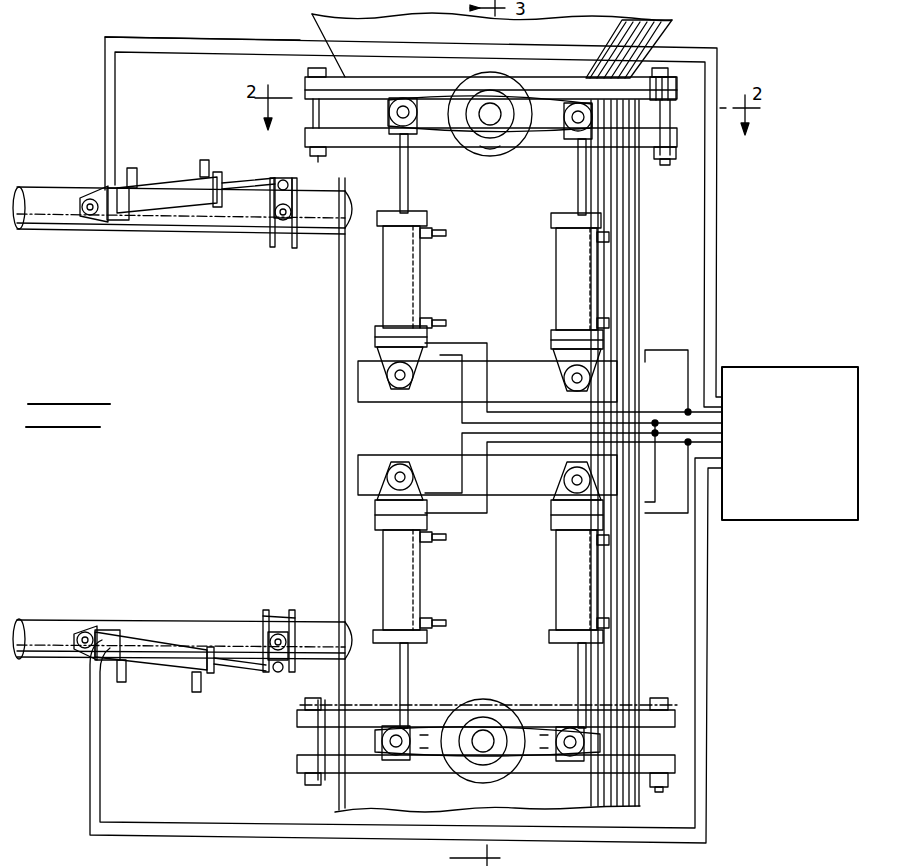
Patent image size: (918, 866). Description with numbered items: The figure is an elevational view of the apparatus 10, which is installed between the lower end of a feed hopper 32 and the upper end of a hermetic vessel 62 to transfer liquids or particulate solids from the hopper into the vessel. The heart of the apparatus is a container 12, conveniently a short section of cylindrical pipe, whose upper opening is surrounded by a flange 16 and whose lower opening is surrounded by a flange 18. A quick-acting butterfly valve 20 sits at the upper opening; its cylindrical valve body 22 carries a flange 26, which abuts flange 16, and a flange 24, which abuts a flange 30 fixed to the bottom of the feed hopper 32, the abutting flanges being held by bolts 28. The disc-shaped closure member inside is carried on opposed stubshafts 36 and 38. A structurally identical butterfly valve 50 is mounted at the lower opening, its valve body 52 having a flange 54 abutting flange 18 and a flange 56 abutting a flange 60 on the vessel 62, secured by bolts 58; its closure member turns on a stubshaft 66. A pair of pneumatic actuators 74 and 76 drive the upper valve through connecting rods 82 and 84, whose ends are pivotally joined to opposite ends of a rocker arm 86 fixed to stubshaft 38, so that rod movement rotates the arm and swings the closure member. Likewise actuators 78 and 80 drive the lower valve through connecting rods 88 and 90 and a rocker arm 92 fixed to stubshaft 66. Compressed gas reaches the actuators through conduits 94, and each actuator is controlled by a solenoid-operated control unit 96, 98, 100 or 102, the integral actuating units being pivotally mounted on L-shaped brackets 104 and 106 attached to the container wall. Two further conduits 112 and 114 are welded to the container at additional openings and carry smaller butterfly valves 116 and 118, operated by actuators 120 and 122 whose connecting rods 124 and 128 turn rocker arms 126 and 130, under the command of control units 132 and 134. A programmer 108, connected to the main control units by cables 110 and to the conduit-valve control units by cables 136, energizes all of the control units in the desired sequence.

The apparatus 10 is at (304, 468).
The container 12 is at (338, 292).
The flange 16 is at (302, 134).
The flange 18 is at (300, 716).
The butterfly valve 20 is at (420, 70).
The valve body 22 is at (663, 120).
The flange 24 is at (306, 88).
The flange 26 is at (336, 126).
The bolts 28 is at (306, 134).
The flange 30 is at (677, 90).
The feed hopper 32 is at (314, 32).
The stubshaft 36 is at (314, 865).
The stubshaft 38 is at (478, 108).
The butterfly valve 50 is at (522, 796).
The valve body 52 is at (610, 738).
The flange 54 is at (676, 724).
The flange 56 is at (676, 774).
The bolts 58 is at (304, 738).
The flange 60 is at (304, 766).
The hermetic vessel 62 is at (334, 786).
The stubshaft 66 is at (484, 740).
The pneumatic actuator 74 is at (386, 272).
The pneumatic actuator 76 is at (556, 268).
The pneumatic actuator 78 is at (384, 575).
The pneumatic actuator 80 is at (554, 588).
The connecting rod 82 is at (410, 178).
The connecting rod 84 is at (578, 180).
The rocker arm 86 is at (548, 136).
The connecting rod 88 is at (410, 666).
The connecting rod 90 is at (570, 664).
The rocker arm 92 is at (446, 752).
The conduits 94 is at (443, 236).
The control unit 96 is at (380, 348).
The control unit 98 is at (550, 344).
The control unit 100 is at (426, 508).
The control unit 102 is at (556, 514).
The L-shaped mounting bracket 104 is at (437, 400).
The L-shaped mounting bracket 106 is at (440, 462).
The programmer 108 is at (768, 373).
The cables 110 is at (645, 356).
The conduit 112 is at (322, 236).
The conduit 114 is at (314, 624).
The butterfly valve 116 is at (284, 252).
The butterfly valve 118 is at (278, 604).
The pneumatic actuator 120 is at (178, 188).
The pneumatic actuator 122 is at (162, 664).
The connecting rod 124 is at (244, 186).
The rocker arm 126 is at (274, 228).
The connecting rod 128 is at (236, 672).
The rocker arm 130 is at (264, 674).
The control unit 132 is at (118, 220).
The control unit 134 is at (104, 632).
The cables 136 is at (214, 54).